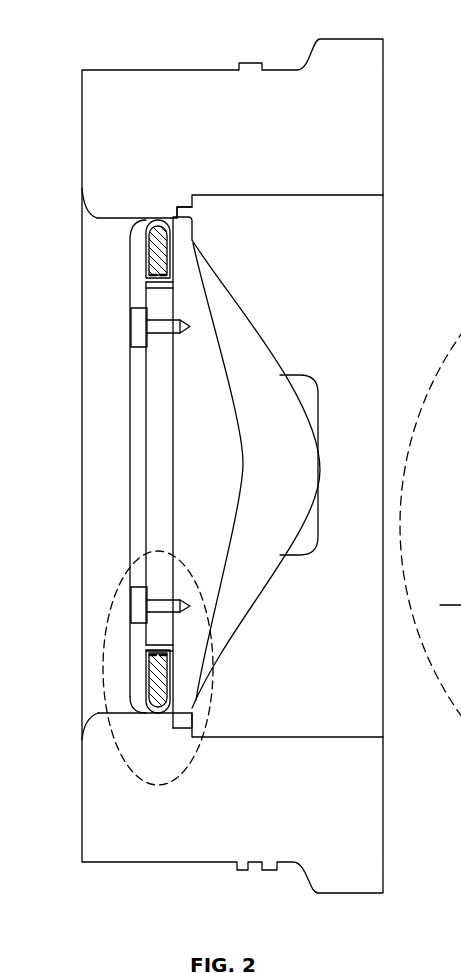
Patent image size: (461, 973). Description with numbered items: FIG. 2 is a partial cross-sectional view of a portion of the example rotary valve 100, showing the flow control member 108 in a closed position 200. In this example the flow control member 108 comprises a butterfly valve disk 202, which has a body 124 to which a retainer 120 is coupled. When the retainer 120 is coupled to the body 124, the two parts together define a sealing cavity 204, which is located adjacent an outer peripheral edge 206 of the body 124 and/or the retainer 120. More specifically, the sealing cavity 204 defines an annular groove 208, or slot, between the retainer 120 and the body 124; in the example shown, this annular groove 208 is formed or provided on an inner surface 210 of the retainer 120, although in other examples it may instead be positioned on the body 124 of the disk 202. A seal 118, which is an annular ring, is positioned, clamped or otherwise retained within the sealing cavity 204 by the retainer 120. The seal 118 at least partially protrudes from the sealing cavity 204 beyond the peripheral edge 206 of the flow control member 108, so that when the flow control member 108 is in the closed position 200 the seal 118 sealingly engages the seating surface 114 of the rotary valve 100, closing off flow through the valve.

The rotary valve 100 is at (137, 47).
The flow control member 108 is at (129, 537).
The seating surface 114 is at (153, 713).
The seal 118 is at (158, 251).
The retainer 120 is at (144, 469).
The body 124 is at (197, 547).
The closed position 200 is at (358, 300).
The butterfly valve disk 202 is at (218, 457).
The sealing cavity 204 is at (173, 278).
The outer peripheral edge 206 is at (177, 207).
The annular groove 208 is at (218, 471).
The inner surface 210 is at (130, 303).